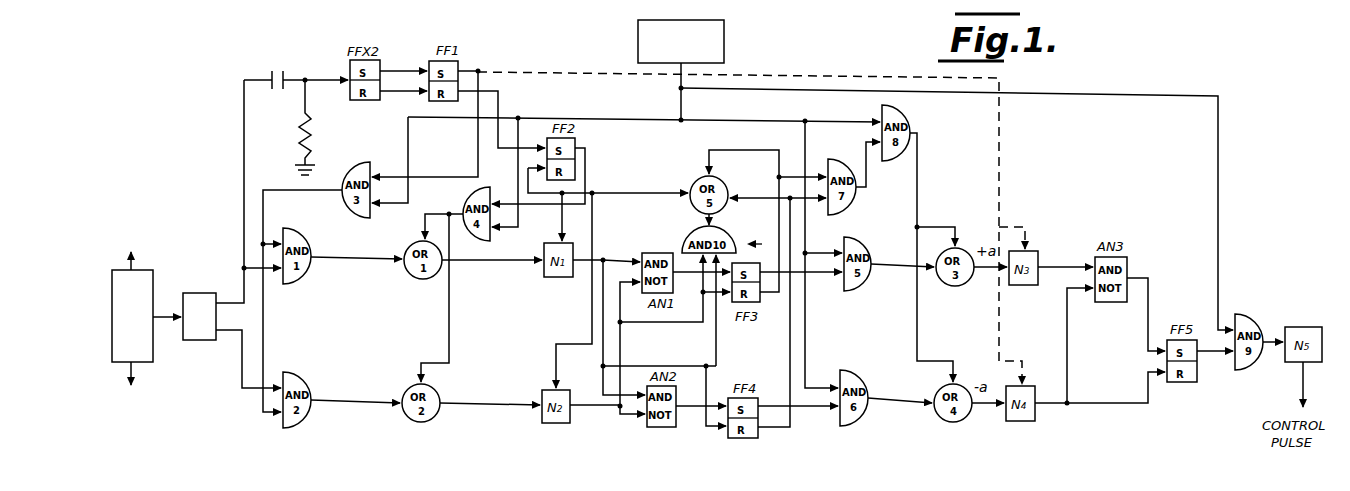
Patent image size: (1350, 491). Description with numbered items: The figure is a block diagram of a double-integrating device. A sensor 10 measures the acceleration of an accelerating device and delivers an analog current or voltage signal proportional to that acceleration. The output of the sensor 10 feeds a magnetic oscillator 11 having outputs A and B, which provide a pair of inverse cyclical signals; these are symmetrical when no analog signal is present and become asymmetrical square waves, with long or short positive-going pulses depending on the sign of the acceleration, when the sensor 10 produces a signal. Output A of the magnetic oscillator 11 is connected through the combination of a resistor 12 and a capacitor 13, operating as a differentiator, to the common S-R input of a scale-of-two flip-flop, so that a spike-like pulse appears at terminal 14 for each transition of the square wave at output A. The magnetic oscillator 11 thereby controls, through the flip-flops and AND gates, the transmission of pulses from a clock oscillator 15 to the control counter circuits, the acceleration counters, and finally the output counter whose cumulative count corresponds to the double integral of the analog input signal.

The sensor 10 is at (153, 287).
The magnetic oscillator 11 is at (197, 293).
The resistor 12 is at (290, 50).
The capacitor 13 is at (310, 144).
The terminal 14 is at (305, 76).
The clock oscillator 15 is at (724, 39).